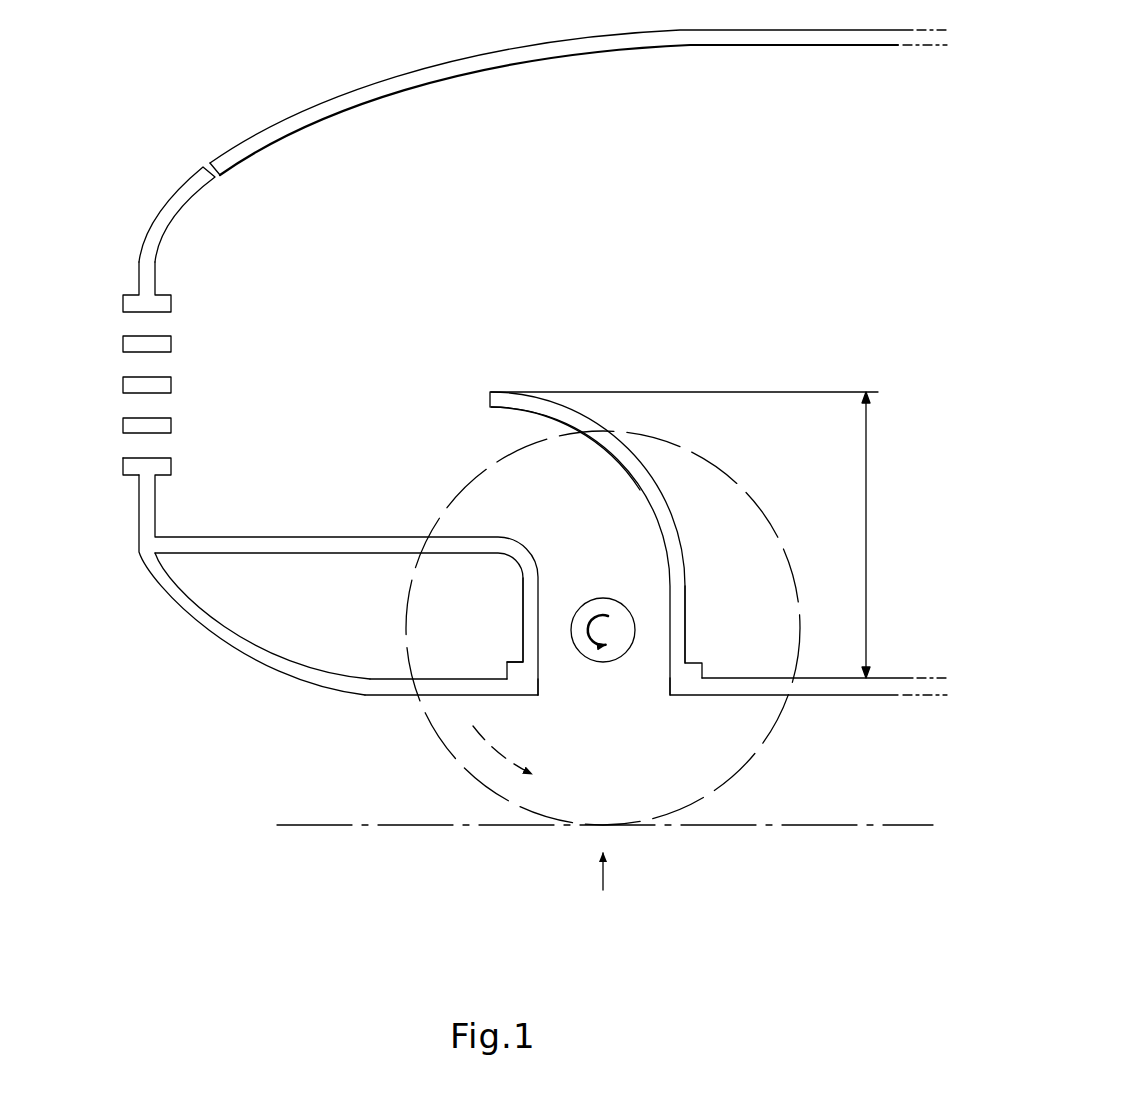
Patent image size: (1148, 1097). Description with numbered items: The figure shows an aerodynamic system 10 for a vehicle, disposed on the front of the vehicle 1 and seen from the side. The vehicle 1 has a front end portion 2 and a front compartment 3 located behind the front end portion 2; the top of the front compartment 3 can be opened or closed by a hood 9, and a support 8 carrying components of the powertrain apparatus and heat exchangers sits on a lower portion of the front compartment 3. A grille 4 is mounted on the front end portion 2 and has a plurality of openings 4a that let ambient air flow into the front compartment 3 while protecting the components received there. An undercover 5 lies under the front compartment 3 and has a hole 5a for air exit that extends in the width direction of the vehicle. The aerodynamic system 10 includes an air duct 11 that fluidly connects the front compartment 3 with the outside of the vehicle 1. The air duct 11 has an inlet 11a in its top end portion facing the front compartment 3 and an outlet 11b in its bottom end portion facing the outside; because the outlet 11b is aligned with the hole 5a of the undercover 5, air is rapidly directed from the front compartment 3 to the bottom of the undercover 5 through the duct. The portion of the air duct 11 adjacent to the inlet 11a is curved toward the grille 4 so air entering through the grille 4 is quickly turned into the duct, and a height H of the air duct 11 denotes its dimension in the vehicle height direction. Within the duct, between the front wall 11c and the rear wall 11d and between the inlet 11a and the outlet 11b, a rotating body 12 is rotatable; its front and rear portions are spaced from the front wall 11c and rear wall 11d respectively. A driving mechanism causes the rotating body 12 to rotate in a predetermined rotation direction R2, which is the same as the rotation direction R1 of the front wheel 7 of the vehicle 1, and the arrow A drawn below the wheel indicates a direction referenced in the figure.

The vehicle 1 is at (290, 106).
The front end portion 2 is at (130, 280).
The front compartment 3 is at (569, 144).
The grille 4 is at (112, 385).
The openings 4a is at (140, 323).
The undercover 5 is at (395, 697).
The hole 5a is at (581, 687).
The front wheel 7 is at (765, 742).
The support 8 is at (338, 537).
The hood 9 is at (482, 53).
The aerodynamic system 10 is at (494, 381).
The air duct 11 is at (665, 471).
The inlet 11a is at (497, 489).
The outlet 11b is at (608, 680).
The front wall 11c is at (521, 622).
The rear wall 11d is at (688, 600).
The rotating body 12 is at (637, 626).
The rotation direction of the front wheel R1 is at (497, 757).
The rotation direction of the rotating body R2 is at (598, 615).
The height of the air duct H is at (871, 535).
The airflow direction A is at (602, 885).